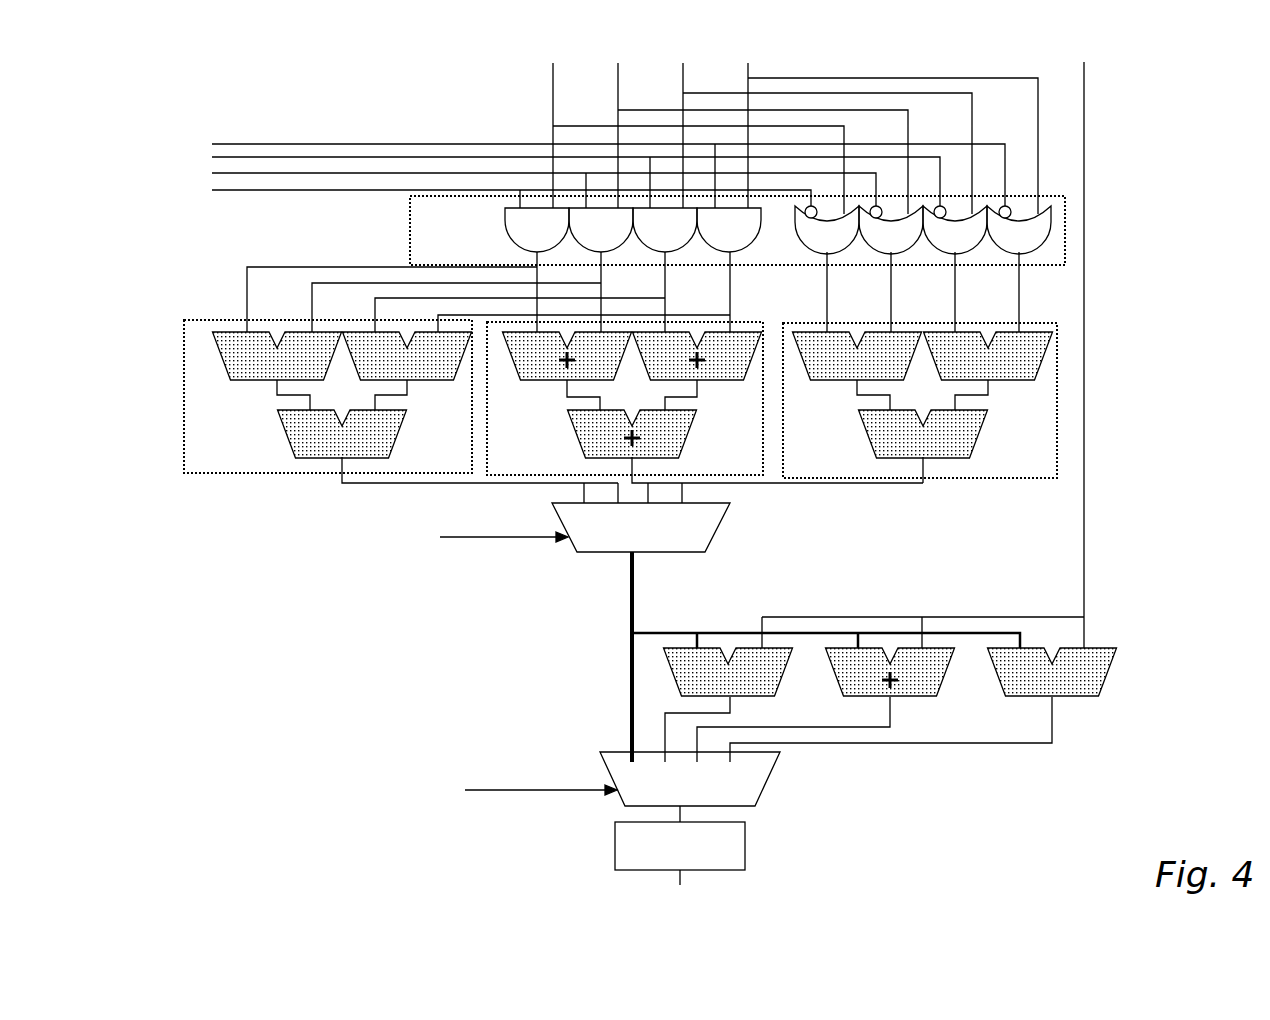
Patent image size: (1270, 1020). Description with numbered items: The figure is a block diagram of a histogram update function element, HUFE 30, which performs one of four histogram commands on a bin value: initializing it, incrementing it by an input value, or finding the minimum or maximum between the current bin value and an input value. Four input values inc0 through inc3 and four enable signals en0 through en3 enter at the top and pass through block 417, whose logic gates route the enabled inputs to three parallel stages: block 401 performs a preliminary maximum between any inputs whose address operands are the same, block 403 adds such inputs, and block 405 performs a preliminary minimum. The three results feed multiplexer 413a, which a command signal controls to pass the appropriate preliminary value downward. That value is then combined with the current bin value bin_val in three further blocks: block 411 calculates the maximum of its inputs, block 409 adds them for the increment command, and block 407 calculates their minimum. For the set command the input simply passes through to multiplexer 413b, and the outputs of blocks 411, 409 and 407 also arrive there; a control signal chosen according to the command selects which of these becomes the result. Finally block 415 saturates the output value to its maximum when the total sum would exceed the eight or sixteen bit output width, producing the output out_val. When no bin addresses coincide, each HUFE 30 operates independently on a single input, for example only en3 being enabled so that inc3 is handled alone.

The HUFE 30 is at (396, 653).
The logic block 417 is at (737, 230).
The preliminary maximum block 401 is at (401, 401).
The addition block 403 is at (705, 402).
The preliminary minimum block 405 is at (920, 403).
The multiplexer 413a is at (720, 508).
The maximum block 411 is at (728, 705).
The adder block 409 is at (826, 705).
The minimum block 407 is at (923, 705).
The multiplexer 413b is at (776, 758).
The saturate block 415 is at (742, 832).